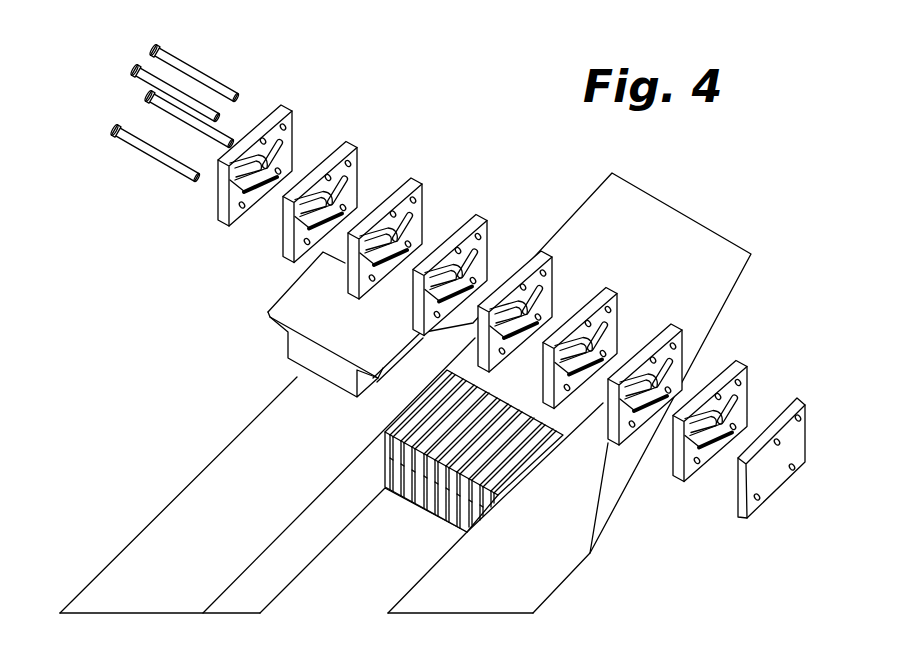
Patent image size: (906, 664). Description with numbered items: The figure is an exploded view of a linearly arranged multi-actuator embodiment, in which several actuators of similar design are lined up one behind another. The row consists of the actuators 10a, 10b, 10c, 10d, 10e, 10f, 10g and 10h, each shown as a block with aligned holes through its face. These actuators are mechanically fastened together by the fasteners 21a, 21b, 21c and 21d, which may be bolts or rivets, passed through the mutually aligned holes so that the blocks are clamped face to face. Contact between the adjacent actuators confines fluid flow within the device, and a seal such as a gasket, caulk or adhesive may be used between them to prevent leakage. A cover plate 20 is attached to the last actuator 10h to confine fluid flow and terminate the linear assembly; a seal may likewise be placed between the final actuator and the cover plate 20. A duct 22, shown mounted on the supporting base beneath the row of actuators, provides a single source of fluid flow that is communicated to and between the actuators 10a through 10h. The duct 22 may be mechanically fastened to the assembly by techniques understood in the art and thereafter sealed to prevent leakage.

The actuator 10a is at (287, 104).
The actuator 10b is at (350, 143).
The actuator 10c is at (414, 180).
The actuator 10d is at (479, 217).
The actuator 10e is at (544, 254).
The actuator 10f is at (609, 291).
The actuator 10g is at (673, 327).
The actuator 10h is at (739, 362).
The cover plate 20 is at (773, 495).
The fastener 21a is at (152, 50).
The fastener 21b is at (133, 72).
The fastener 21c is at (146, 98).
The fastener 21d is at (113, 132).
The duct 22 is at (286, 341).